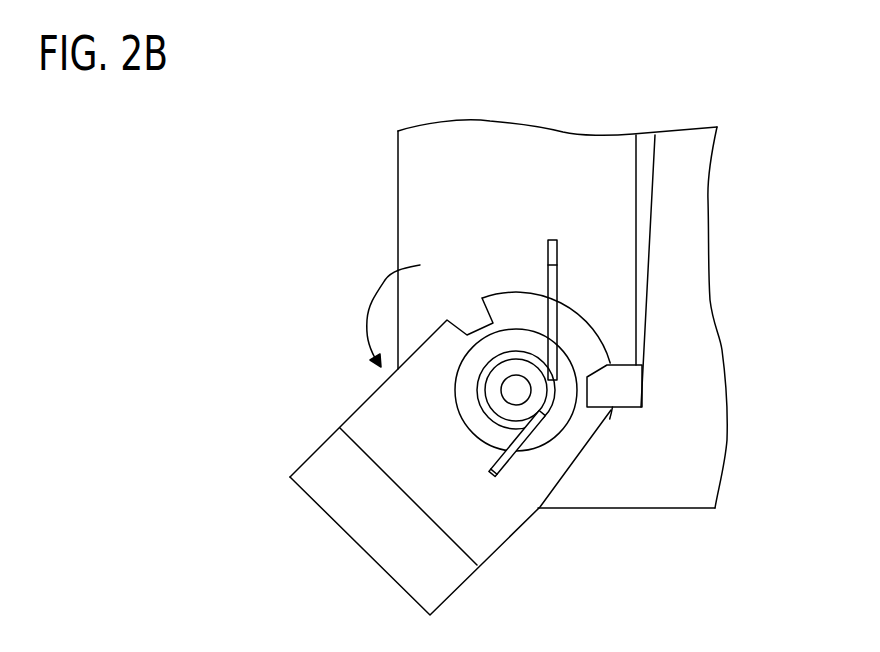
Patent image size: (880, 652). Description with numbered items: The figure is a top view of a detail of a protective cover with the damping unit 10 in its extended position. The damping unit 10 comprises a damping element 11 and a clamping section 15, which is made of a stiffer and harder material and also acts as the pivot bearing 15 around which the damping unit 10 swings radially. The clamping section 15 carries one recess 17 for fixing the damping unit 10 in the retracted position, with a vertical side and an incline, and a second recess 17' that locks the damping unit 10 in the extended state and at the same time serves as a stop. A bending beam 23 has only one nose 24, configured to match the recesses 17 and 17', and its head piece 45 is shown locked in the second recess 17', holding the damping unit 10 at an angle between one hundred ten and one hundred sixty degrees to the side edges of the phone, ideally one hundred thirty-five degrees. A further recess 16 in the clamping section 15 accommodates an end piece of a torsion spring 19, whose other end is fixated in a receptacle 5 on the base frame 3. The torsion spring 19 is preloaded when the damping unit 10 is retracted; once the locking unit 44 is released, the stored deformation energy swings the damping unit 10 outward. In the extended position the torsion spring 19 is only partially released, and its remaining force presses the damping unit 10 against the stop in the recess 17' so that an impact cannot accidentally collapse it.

The base frame 3 is at (470, 168).
The receptacle 5 is at (557, 249).
The damping unit 10 is at (340, 387).
The damping element 11 is at (373, 532).
The clamping section 15 is at (580, 432).
The recess 16 is at (492, 474).
The recess 17 is at (404, 289).
The second recess 17' is at (701, 421).
The torsion spring 19 is at (545, 420).
The bending beam 23 is at (645, 202).
The nose 24 is at (597, 390).
The locking unit 44 is at (650, 355).
The head piece 45 is at (625, 378).